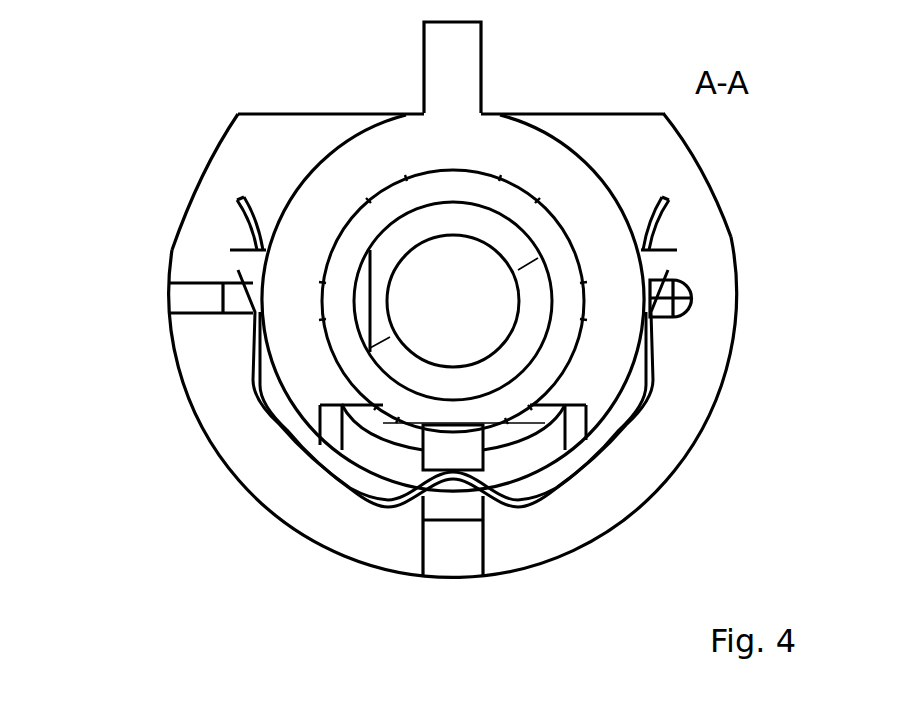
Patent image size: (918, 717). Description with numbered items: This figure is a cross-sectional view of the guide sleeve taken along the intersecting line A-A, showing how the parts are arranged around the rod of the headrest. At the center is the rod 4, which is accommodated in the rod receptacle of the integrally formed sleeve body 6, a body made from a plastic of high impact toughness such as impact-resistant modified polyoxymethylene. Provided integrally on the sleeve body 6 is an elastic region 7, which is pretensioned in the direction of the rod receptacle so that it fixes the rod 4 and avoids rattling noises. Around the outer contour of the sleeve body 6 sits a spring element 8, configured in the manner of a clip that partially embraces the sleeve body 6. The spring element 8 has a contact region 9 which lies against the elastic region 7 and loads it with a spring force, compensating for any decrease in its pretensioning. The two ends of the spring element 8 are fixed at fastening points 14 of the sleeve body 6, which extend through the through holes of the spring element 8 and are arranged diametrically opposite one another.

The rod 4 is at (502, 198).
The sleeve body 6 is at (533, 450).
The elastic region 7 is at (450, 450).
The spring element 8 is at (627, 415).
The contact region 9 is at (453, 481).
The fastening points 14 is at (255, 266).